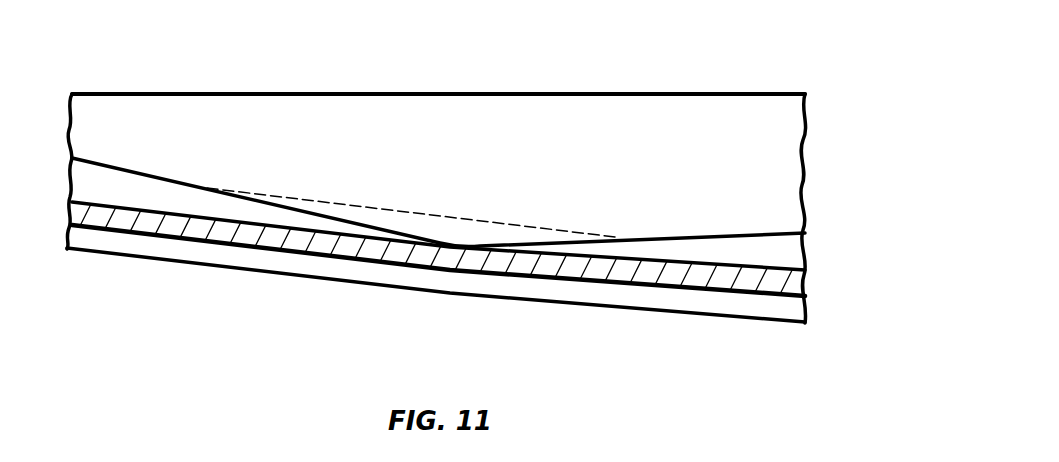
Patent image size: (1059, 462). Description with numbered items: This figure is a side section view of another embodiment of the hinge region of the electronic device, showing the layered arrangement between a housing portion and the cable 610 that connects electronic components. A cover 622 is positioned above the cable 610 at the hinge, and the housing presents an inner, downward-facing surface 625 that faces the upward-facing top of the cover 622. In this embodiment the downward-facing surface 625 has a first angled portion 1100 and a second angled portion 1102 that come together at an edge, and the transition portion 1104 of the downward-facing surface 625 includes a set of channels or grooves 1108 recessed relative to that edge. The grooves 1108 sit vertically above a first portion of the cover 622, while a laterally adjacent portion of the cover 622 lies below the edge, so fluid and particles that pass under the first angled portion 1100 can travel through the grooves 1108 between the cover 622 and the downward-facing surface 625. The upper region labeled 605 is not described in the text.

The cover layer 605 is at (698, 110).
The downward-facing surface 625 is at (764, 236).
The first angled portion 1100 is at (173, 180).
The grooves 1108 is at (307, 227).
The cover 622 is at (640, 275).
The second angled portion 1102 is at (683, 237).
The cable 610 is at (783, 312).
The transition portion 1104 is at (618, 333).